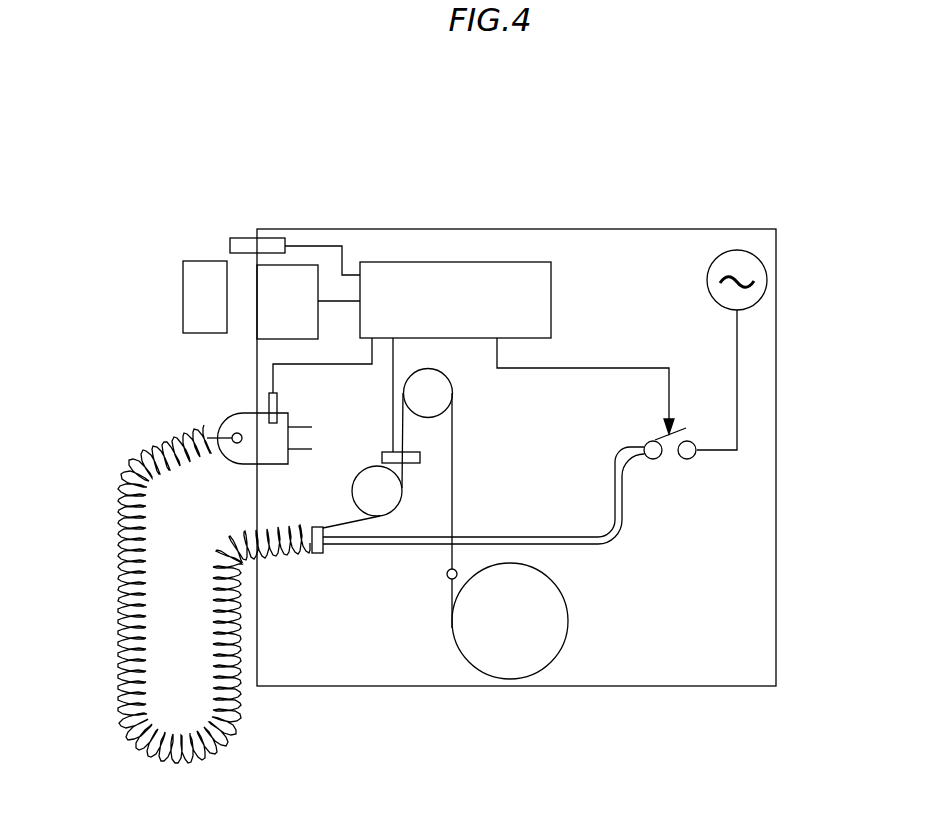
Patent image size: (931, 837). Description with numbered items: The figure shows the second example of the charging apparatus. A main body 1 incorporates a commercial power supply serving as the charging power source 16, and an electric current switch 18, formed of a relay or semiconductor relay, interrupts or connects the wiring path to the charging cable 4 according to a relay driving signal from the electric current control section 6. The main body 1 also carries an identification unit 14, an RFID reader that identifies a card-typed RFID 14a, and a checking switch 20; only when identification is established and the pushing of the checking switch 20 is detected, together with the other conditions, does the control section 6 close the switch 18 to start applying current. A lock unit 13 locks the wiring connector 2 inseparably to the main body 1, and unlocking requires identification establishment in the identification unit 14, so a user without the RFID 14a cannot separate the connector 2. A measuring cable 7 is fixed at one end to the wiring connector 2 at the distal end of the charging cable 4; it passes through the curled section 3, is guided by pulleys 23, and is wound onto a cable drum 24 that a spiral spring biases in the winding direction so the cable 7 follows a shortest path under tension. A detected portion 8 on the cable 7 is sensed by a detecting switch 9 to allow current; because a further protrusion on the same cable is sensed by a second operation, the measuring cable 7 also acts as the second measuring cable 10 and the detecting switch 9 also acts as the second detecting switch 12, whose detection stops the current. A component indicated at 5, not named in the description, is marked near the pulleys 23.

The main body 1 is at (655, 672).
The wiring connector 2 is at (241, 421).
The curled section 3 is at (106, 723).
The charging cable 4 is at (237, 712).
The drive unit 5 is at (477, 452).
The electric current control section 6 is at (540, 291).
The measuring cable 7 is at (483, 604).
The second measuring cable 10 is at (343, 530).
The detected portion 8 is at (448, 582).
The detecting switch 9 is at (377, 400).
The second detecting switch 12 is at (386, 455).
The lock unit 13 is at (270, 398).
The identification unit 14 is at (272, 285).
The card-typed RFID 14a is at (197, 286).
The charging power source 16 is at (748, 268).
The electric current switch 18 is at (671, 456).
The checking switch 20 is at (243, 238).
The pulleys 23 is at (440, 393).
The cable drum 24 is at (523, 662).